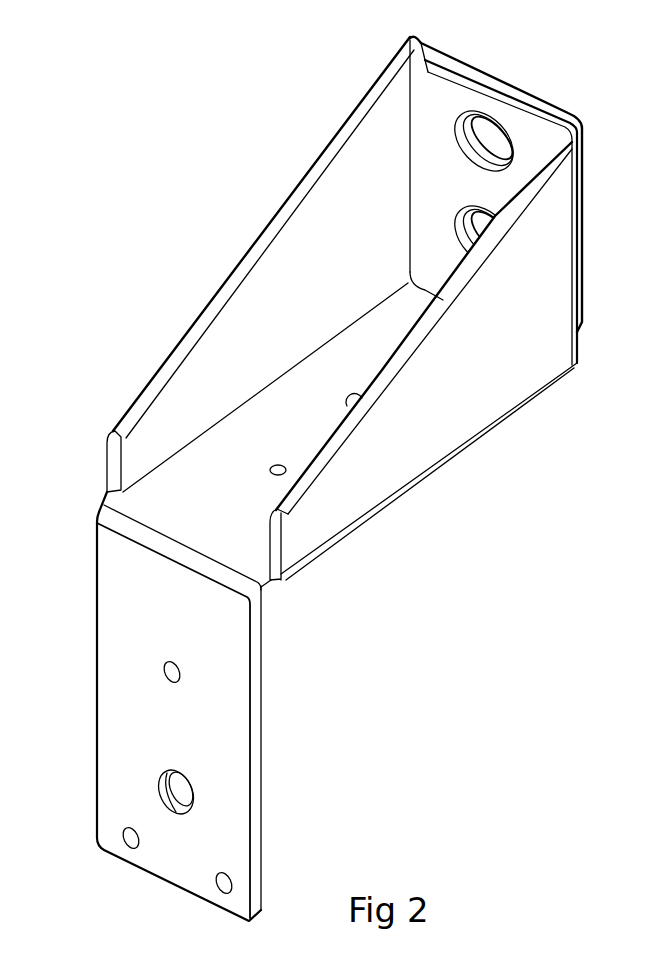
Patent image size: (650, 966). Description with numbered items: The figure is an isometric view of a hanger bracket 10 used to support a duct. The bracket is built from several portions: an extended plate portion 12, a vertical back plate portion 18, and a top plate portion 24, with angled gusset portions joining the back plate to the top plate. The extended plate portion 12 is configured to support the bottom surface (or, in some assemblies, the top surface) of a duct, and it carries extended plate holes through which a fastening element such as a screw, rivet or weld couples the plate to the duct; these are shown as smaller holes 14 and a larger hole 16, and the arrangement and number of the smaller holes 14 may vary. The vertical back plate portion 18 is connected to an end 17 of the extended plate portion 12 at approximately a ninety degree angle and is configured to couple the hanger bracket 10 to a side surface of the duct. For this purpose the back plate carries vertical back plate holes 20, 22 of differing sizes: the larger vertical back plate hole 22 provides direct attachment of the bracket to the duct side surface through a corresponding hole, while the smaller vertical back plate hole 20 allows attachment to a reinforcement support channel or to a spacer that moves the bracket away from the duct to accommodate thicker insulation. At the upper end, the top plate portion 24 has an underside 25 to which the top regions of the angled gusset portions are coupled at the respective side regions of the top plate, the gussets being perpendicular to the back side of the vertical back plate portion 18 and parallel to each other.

The hanger bracket 10 is at (304, 481).
The extended plate portion 12 is at (97, 707).
The smaller extended plate holes 14 is at (180, 672).
The extended plate hole 16 is at (183, 793).
The end of the extended plate portion 17 is at (103, 506).
The vertical back plate portion 18 is at (180, 482).
The smaller vertical back plate hole 20 is at (281, 478).
The larger vertical back plate hole 22 is at (355, 390).
The top plate portion 24 is at (522, 100).
The underside of the top plate portion 25 is at (447, 138).